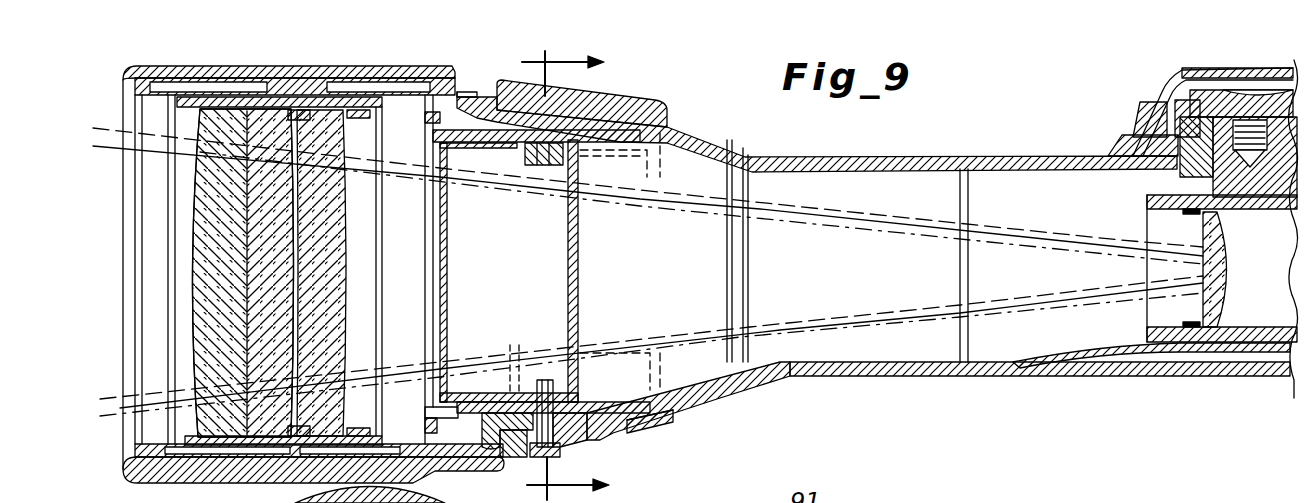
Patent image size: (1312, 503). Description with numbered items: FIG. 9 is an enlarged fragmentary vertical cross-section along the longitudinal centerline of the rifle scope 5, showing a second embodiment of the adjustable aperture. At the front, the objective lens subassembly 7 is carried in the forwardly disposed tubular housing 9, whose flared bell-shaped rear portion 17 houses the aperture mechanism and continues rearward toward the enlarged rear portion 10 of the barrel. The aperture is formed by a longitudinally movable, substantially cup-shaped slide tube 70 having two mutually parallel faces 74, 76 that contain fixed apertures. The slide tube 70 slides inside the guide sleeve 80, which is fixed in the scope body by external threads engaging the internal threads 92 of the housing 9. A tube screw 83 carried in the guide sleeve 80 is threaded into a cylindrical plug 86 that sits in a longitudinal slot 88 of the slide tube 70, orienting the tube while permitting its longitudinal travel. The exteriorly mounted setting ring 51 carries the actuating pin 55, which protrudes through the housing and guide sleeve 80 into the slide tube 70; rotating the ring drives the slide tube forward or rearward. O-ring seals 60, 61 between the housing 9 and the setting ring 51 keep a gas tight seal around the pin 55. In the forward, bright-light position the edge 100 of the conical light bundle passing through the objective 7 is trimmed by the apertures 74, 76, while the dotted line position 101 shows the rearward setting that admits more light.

The rifle scope 5 is at (1027, 130).
The objective lens subassembly 7 is at (160, 309).
The tubular housing 9 is at (497, 90).
The enlarged rear portion 10 is at (590, 270).
The flared bell-shaped rear portion 17 is at (702, 138).
The setting ring 51 is at (614, 100).
The actuating pin 55 is at (546, 382).
The O-ring seal 60 is at (512, 458).
The O-ring seal 61 is at (575, 447).
The slide tube 70 is at (596, 295).
The fixed aperture face 74 is at (582, 372).
The fixed aperture face 76 is at (450, 366).
The guide sleeve 80 is at (672, 142).
The tube screw 83 is at (535, 166).
The cylindrical plug 86 is at (550, 166).
The longitudinal slot 88 is at (500, 150).
The internal threads 92 is at (630, 440).
The edge of the conical bundle of light rays 100 is at (878, 312).
The dotted line position 101 is at (1049, 306).